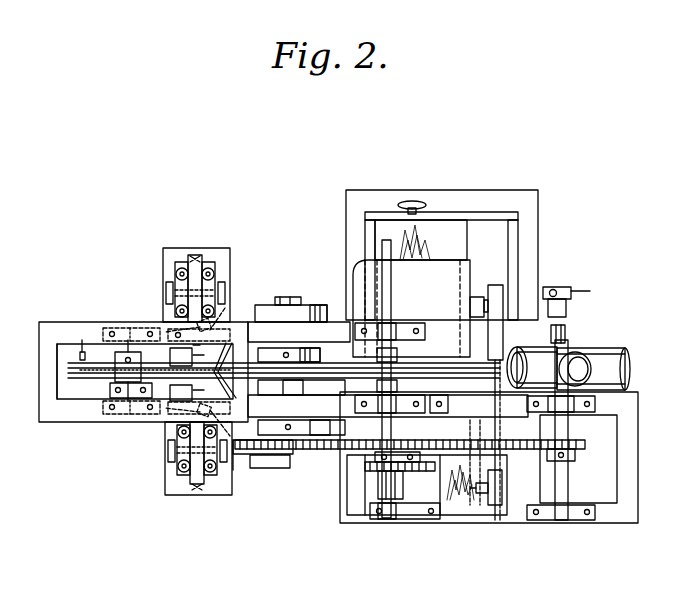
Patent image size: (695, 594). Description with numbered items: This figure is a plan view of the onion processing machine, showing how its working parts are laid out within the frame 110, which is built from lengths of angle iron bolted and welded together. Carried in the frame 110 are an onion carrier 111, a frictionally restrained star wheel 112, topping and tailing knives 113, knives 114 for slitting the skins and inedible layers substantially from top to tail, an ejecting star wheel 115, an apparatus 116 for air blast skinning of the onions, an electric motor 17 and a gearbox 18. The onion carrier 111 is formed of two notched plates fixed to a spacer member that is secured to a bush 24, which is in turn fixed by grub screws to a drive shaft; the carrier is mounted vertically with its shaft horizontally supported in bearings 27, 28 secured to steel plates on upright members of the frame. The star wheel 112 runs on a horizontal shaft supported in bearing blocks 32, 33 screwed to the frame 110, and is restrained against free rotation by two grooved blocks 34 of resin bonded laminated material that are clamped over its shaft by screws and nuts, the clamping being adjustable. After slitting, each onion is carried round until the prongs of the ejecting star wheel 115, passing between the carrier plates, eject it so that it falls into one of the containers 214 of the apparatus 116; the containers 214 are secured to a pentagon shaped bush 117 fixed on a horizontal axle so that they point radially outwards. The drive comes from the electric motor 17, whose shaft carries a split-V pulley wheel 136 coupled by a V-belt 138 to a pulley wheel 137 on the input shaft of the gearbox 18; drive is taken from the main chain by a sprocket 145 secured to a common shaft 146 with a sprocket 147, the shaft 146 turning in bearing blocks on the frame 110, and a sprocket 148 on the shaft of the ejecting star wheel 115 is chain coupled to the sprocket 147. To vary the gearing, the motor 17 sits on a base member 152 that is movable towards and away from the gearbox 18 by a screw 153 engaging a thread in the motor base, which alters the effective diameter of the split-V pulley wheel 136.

The frame 110 is at (38, 412).
The onion carrier 111 is at (83, 352).
The frictionally restrained star wheel 112 is at (112, 358).
The bearing block 33 is at (117, 330).
The bearing block 32 is at (113, 410).
The blocks 34 is at (118, 392).
The topping and tailing knives 113 is at (164, 452).
The bearing 27 is at (263, 316).
The bush 24 is at (283, 304).
The ejecting star wheel 115 is at (353, 360).
The bearing 28 is at (292, 428).
The knives 114 is at (240, 385).
The sprocket 145 is at (418, 452).
The shaft 146 is at (392, 490).
The sprocket 148 is at (366, 470).
The sprocket 147 is at (400, 490).
The gearbox 18 is at (458, 500).
The pulley wheel 137 is at (503, 500).
The base member 152 is at (445, 225).
The screw 153 is at (414, 203).
The electric motor 17 is at (447, 280).
The pulley wheel 136 is at (505, 292).
The V-belt 138 is at (495, 340).
The apparatus for air blast skinning 116 is at (615, 343).
The container 214 is at (616, 369).
The pentagon shaped bush 117 is at (565, 410).